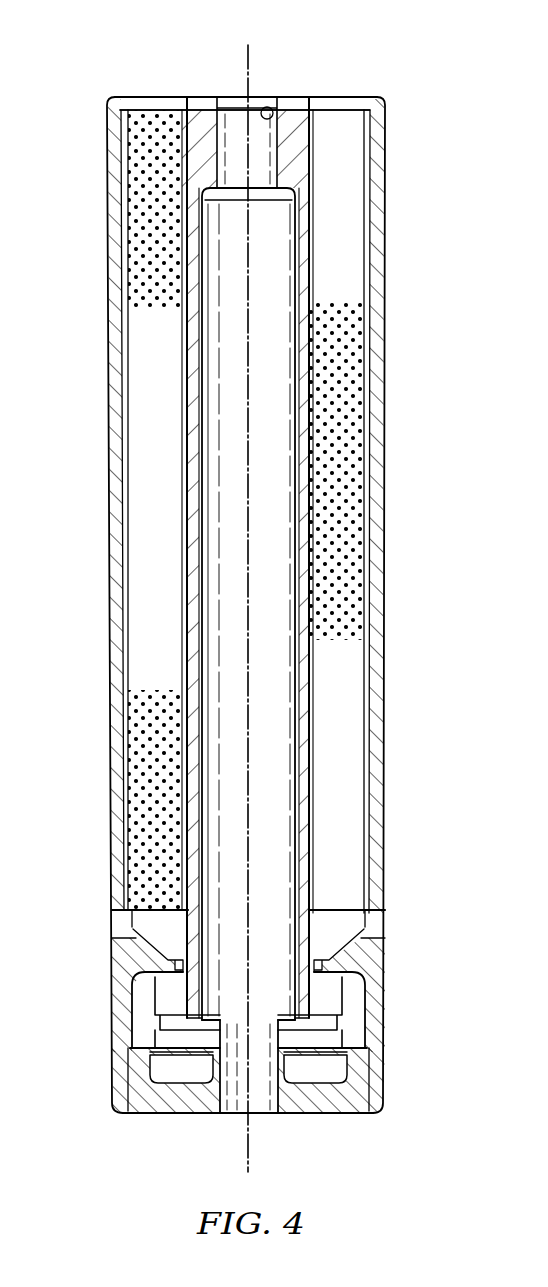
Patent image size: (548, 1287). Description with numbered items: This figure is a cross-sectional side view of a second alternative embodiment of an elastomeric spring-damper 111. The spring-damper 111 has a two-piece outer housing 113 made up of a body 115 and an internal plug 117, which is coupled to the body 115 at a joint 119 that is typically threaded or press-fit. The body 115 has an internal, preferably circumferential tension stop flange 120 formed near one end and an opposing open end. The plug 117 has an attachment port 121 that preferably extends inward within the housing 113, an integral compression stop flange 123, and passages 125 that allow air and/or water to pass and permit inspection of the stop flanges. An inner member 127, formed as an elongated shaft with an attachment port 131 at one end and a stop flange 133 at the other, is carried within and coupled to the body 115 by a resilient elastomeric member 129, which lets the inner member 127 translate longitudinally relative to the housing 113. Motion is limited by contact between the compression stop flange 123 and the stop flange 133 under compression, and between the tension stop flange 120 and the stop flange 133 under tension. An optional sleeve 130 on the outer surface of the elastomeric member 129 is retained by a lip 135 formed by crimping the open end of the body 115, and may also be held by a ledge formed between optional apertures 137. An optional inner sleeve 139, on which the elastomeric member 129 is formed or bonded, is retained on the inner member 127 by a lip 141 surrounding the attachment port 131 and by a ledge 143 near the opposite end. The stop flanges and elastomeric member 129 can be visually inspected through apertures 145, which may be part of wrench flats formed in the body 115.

The spring-damper 111 is at (324, 51).
The outer housing 113 is at (105, 345).
The body 115 is at (108, 652).
The internal plug 117 is at (138, 1120).
The joint 119 is at (376, 1073).
The tension stop flange 120 is at (130, 962).
The attachment port 121 is at (232, 1116).
The compression stop flange 123 is at (284, 1116).
The passages 125 is at (337, 1116).
The inner member 127 is at (183, 424).
The elastomeric member 129 is at (142, 512).
The sleeve 130 is at (119, 210).
The attachment port 131 is at (267, 106).
The stop flange 133 is at (160, 1034).
The lip 135 is at (123, 97).
The apertures 137 is at (113, 917).
The inner sleeve 139 is at (186, 576).
The lip 141 is at (189, 95).
The ledge 143 is at (318, 934).
The apertures 145 is at (382, 1014).